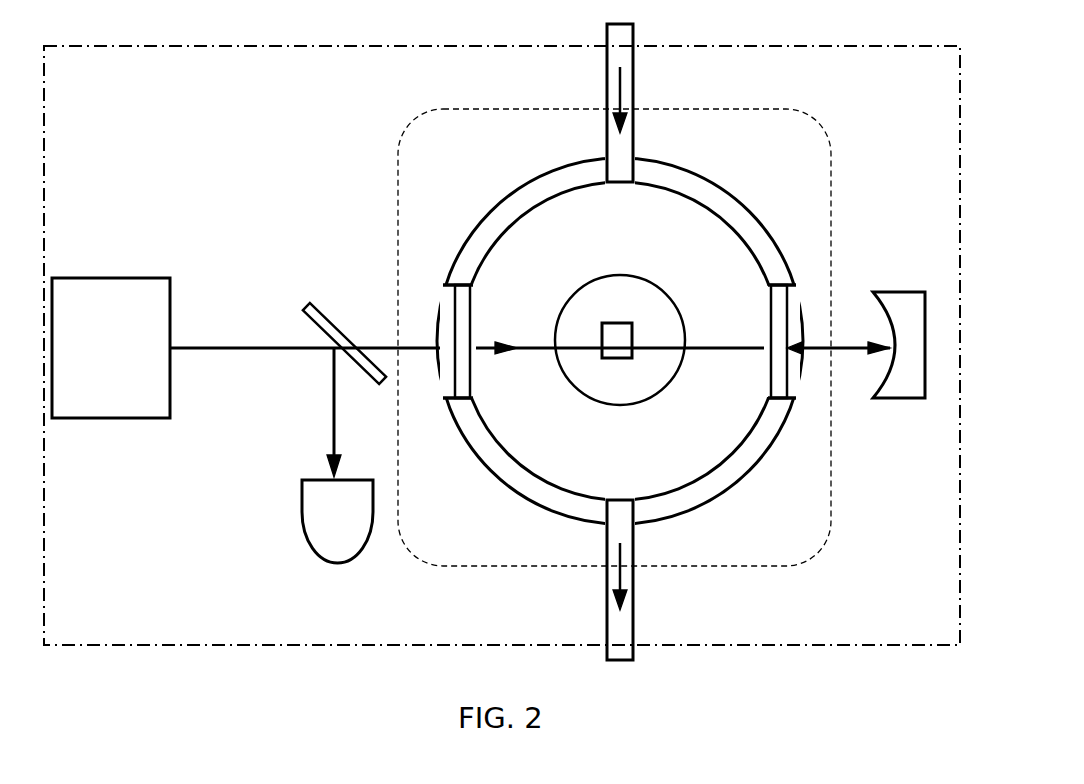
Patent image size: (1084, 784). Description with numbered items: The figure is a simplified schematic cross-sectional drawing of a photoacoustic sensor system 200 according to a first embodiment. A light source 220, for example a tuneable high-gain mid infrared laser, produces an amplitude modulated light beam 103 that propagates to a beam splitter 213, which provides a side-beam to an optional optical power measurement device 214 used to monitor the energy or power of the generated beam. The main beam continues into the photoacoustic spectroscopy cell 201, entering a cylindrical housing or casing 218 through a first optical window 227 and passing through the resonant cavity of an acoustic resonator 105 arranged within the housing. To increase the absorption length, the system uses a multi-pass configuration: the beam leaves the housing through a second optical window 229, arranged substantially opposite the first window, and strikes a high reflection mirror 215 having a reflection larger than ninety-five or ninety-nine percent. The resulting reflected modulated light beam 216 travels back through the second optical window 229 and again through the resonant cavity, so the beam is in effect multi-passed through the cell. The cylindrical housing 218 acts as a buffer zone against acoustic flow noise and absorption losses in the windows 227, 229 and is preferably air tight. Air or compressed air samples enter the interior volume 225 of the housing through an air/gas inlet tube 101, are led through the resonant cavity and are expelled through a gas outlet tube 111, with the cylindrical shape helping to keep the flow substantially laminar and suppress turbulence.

The air/gas inlet tube 101 is at (573, 103).
The amplitude modulated light beam 103 is at (530, 331).
The acoustic resonator 105 is at (601, 325).
The gas outlet tube 111 is at (662, 580).
The photoacoustic sensor system 200 is at (502, 369).
The photoacoustic spectroscopy cell 201 is at (589, 363).
The beam splitter 213 is at (306, 326).
The optical power measurement device 214 is at (305, 455).
The high reflection mirror 215 is at (884, 323).
The reflected modulated light beam 216 is at (838, 331).
The cylindrical housing 218 is at (620, 341).
The light source 220 is at (111, 348).
The interior volume 225 is at (626, 221).
The first optical window 227 is at (487, 343).
The second optical window 229 is at (752, 339).